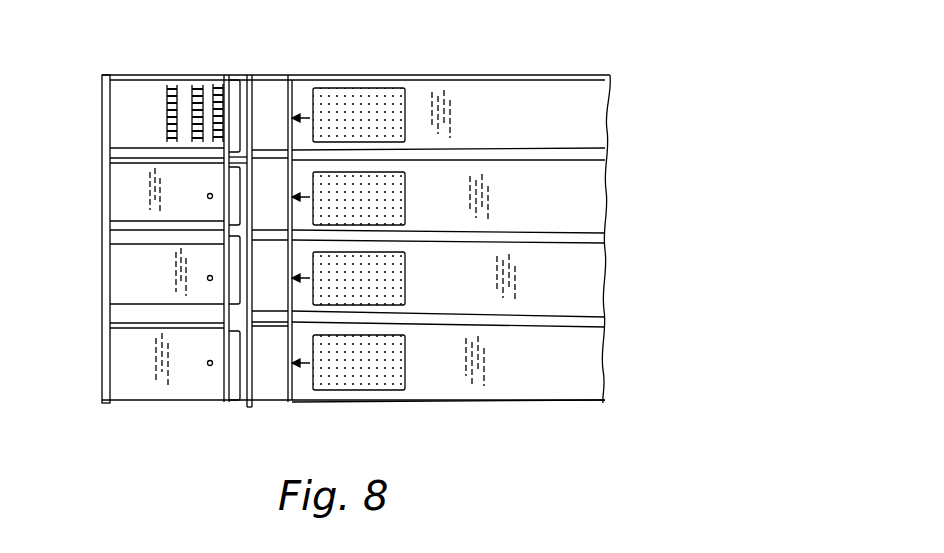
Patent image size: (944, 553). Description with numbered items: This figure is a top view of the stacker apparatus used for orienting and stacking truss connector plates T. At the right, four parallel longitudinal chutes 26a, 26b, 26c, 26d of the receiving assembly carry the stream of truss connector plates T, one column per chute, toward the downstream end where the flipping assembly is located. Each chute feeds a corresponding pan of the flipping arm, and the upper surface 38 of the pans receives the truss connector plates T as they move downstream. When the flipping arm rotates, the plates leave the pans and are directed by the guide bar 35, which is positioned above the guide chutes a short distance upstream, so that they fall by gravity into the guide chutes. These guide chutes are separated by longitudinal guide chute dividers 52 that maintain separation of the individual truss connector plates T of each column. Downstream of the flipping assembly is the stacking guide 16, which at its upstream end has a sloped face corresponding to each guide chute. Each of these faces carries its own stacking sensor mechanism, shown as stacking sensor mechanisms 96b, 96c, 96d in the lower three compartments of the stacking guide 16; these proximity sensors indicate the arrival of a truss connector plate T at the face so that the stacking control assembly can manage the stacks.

The stacking guide 16 is at (141, 385).
The guide bar 35 is at (255, 87).
The upper surface 38 is at (228, 378).
The guide chute divider 52 is at (275, 324).
The stacking sensor mechanism 96b is at (208, 196).
The stacking sensor mechanism 96c is at (208, 278).
The stacking sensor mechanism 96d is at (208, 363).
The longitudinal chute 26a is at (584, 129).
The longitudinal chute 26b is at (574, 205).
The longitudinal chute 26c is at (582, 291).
The longitudinal chute 26d is at (578, 368).
The truss connector plate T is at (191, 108).